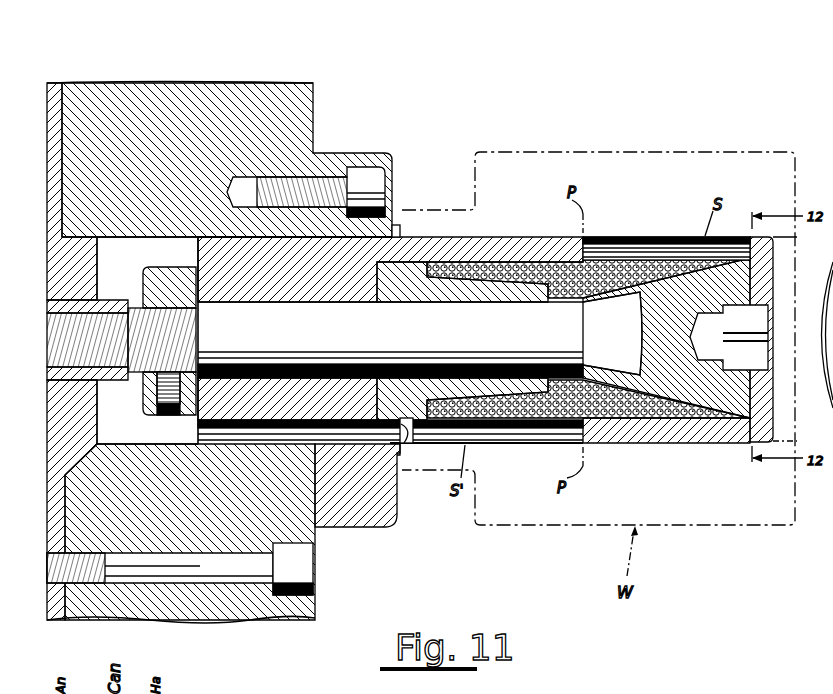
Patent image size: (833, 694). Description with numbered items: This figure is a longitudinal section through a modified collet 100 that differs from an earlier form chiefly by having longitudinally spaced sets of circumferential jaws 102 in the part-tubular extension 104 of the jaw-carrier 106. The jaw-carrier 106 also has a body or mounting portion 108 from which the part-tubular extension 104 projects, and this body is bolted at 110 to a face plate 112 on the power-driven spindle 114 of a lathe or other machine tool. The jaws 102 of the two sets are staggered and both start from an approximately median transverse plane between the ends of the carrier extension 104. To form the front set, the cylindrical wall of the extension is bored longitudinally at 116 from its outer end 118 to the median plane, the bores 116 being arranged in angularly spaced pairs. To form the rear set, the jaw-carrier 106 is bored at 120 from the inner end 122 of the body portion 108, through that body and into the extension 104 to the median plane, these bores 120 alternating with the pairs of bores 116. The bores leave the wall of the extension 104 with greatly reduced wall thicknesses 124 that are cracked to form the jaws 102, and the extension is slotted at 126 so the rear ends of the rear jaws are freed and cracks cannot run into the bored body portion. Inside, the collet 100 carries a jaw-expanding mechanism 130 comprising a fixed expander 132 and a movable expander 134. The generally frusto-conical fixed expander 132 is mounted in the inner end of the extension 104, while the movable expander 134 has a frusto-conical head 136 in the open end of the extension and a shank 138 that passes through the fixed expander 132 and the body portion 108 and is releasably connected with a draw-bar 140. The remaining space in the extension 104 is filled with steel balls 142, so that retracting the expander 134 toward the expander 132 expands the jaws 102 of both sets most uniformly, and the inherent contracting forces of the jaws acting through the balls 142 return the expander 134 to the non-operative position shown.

The modified collet 100 is at (442, 162).
The circumferential jaws 102 is at (657, 237).
The part-tubular extension 104 is at (597, 445).
The jaw-carrier 106 is at (399, 479).
The body portion 108 is at (377, 503).
The bolt 110 is at (379, 188).
The face plate 112 is at (303, 123).
The power-driven spindle 114 is at (87, 427).
The bores 116 is at (637, 253).
The outer end 118 is at (752, 250).
The bores 120 is at (199, 436).
The inner end 122 is at (157, 423).
The reduced wall thicknesses 124 is at (616, 249).
The slots 126 is at (412, 445).
The jaw-expanding mechanism 130 is at (779, 290).
The fixed expander 132 is at (463, 290).
The movable expander 134 is at (690, 380).
The frusto-conical head 136 is at (630, 337).
The shank 138 is at (427, 335).
The draw-bar 140 is at (112, 301).
The steel balls 142 is at (644, 388).